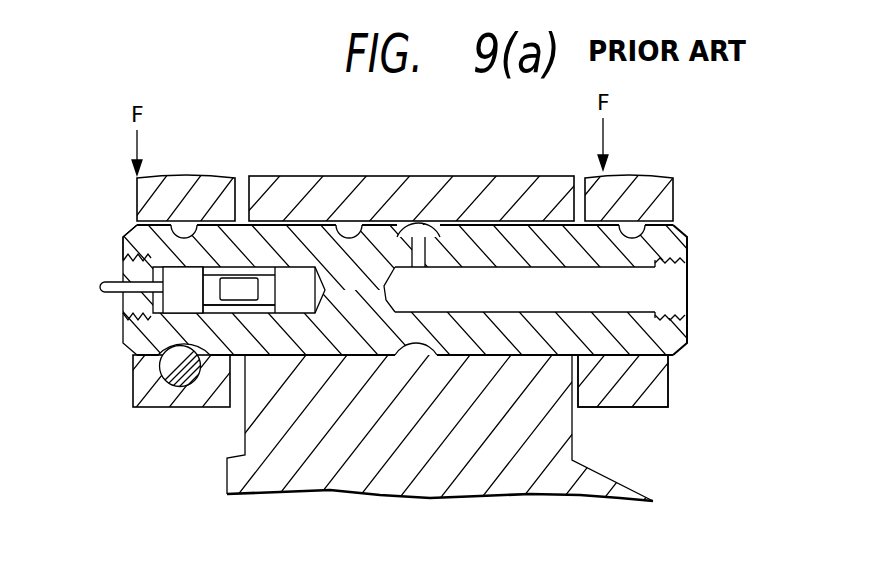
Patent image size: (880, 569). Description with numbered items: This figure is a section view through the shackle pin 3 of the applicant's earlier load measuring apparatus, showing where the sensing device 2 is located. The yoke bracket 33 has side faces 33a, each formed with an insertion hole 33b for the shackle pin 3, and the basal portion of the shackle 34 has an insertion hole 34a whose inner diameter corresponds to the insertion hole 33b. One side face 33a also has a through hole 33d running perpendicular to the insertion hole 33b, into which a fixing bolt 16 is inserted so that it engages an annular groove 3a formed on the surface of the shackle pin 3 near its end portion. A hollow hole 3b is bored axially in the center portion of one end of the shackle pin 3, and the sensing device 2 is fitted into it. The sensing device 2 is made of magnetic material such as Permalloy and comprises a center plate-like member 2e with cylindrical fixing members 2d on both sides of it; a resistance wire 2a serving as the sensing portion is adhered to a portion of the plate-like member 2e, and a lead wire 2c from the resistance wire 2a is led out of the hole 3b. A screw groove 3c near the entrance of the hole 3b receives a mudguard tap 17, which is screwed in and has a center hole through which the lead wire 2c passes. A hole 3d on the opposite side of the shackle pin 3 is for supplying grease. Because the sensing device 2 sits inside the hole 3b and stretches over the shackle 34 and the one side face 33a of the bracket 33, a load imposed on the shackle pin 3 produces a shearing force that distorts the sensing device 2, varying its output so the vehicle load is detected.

The sensing device 2 is at (300, 305).
The resistance wire 2a is at (250, 296).
The lead wire 2c is at (110, 297).
The cylindrical fixing members 2d is at (207, 298).
The center plate-like member 2e is at (248, 296).
The shackle pin 3 is at (383, 347).
The annular groove 3a is at (207, 392).
The hollow hole 3b is at (160, 265).
The screw groove 3c is at (124, 270).
The hole 3d is at (622, 305).
The fixing bolt 16 is at (160, 380).
The mudguard tap 17 is at (177, 297).
The yoke bracket 33 is at (671, 390).
The side faces 33a is at (215, 180).
The insertion hole 33b is at (185, 238).
The through hole 33d is at (178, 388).
The shackle 34 is at (508, 175).
The insertion hole 34a is at (362, 224).